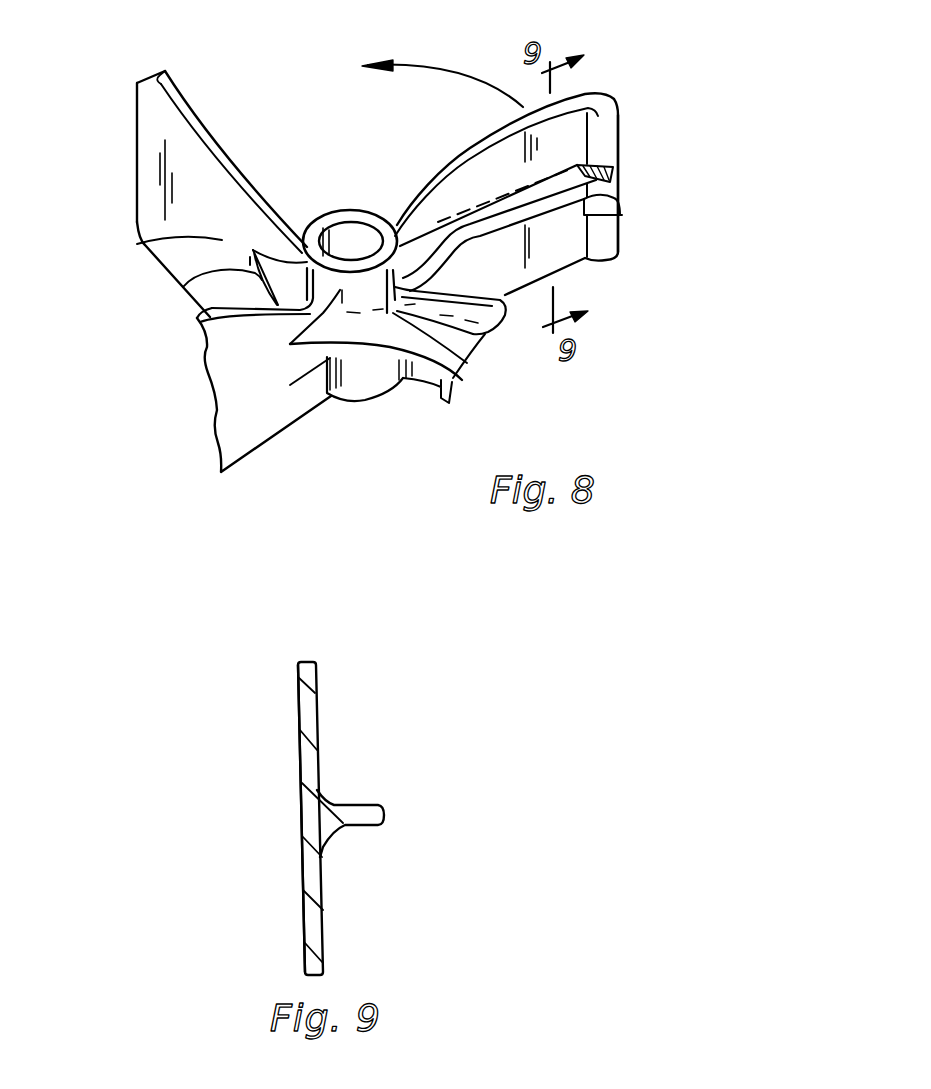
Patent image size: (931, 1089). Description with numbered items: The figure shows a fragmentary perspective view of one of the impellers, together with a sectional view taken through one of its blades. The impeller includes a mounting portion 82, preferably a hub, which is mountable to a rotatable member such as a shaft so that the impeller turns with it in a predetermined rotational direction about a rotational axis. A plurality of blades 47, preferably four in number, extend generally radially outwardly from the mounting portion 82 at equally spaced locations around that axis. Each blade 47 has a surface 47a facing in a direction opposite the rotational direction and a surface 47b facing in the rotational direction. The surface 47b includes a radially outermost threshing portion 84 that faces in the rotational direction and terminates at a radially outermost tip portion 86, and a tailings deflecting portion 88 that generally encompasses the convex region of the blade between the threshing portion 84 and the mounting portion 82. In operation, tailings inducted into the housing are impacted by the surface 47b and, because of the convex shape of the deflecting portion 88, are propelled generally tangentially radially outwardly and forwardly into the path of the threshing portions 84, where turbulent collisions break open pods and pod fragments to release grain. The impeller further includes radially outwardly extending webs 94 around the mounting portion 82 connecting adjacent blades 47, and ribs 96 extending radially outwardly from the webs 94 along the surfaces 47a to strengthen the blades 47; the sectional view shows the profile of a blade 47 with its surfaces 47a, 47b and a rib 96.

In FIG. 8, the blade 47 is at (652, 103).
In FIG. 8, the surface 47a is at (573, 160).
In FIG. 9, the surface 47a is at (322, 897).
In FIG. 9, the surface 47b is at (298, 892).
In FIG. 8, the mounting portion 82 is at (334, 210).
In FIG. 8, the threshing portion 84 is at (140, 152).
In FIG. 8, the tip portion 86 is at (137, 86).
In FIG. 8, the tailings deflecting portion 88 is at (145, 243).
In FIG. 8, the web 94 is at (185, 286).
In FIG. 8, the rib 96 is at (595, 197).
In FIG. 9, the rib 96 is at (367, 807).